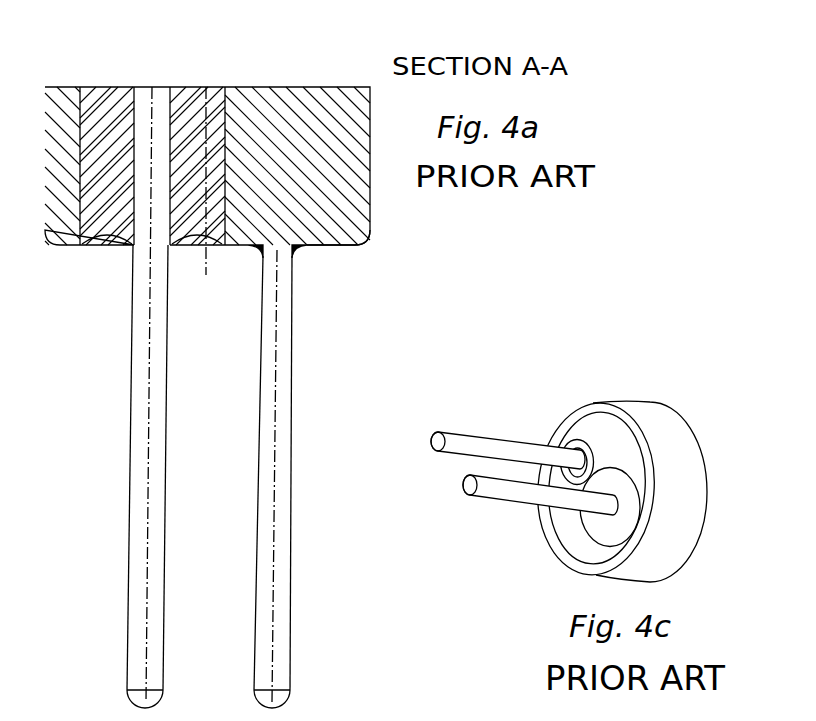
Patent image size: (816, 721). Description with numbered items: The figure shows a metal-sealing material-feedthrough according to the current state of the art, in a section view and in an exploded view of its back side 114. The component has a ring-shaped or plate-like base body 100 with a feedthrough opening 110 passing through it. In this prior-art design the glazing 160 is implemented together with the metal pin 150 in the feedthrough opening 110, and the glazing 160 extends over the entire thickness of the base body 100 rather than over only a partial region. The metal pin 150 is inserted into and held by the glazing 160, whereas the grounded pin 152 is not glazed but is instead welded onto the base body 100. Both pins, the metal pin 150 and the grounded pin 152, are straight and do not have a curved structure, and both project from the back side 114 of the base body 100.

In FIG. 4A, the ring-shaped or plate-like base body 100 is at (287, 72).
In FIG. 4C, the ring-shaped or plate-like base body 100 is at (695, 402).
In FIG. 4A, the feedthrough opening 110 is at (105, 103).
In FIG. 4A, the back side 114 is at (330, 250).
In FIG. 4C, the back side 114 is at (606, 442).
In FIG. 4A, the metal pin 150 is at (131, 560).
In FIG. 4C, the metal pin 150 is at (482, 448).
In FIG. 4A, the grounded pin 152 is at (278, 645).
In FIG. 4C, the grounded pin 152 is at (497, 490).
In FIG. 4A, the glazing 160 is at (193, 113).